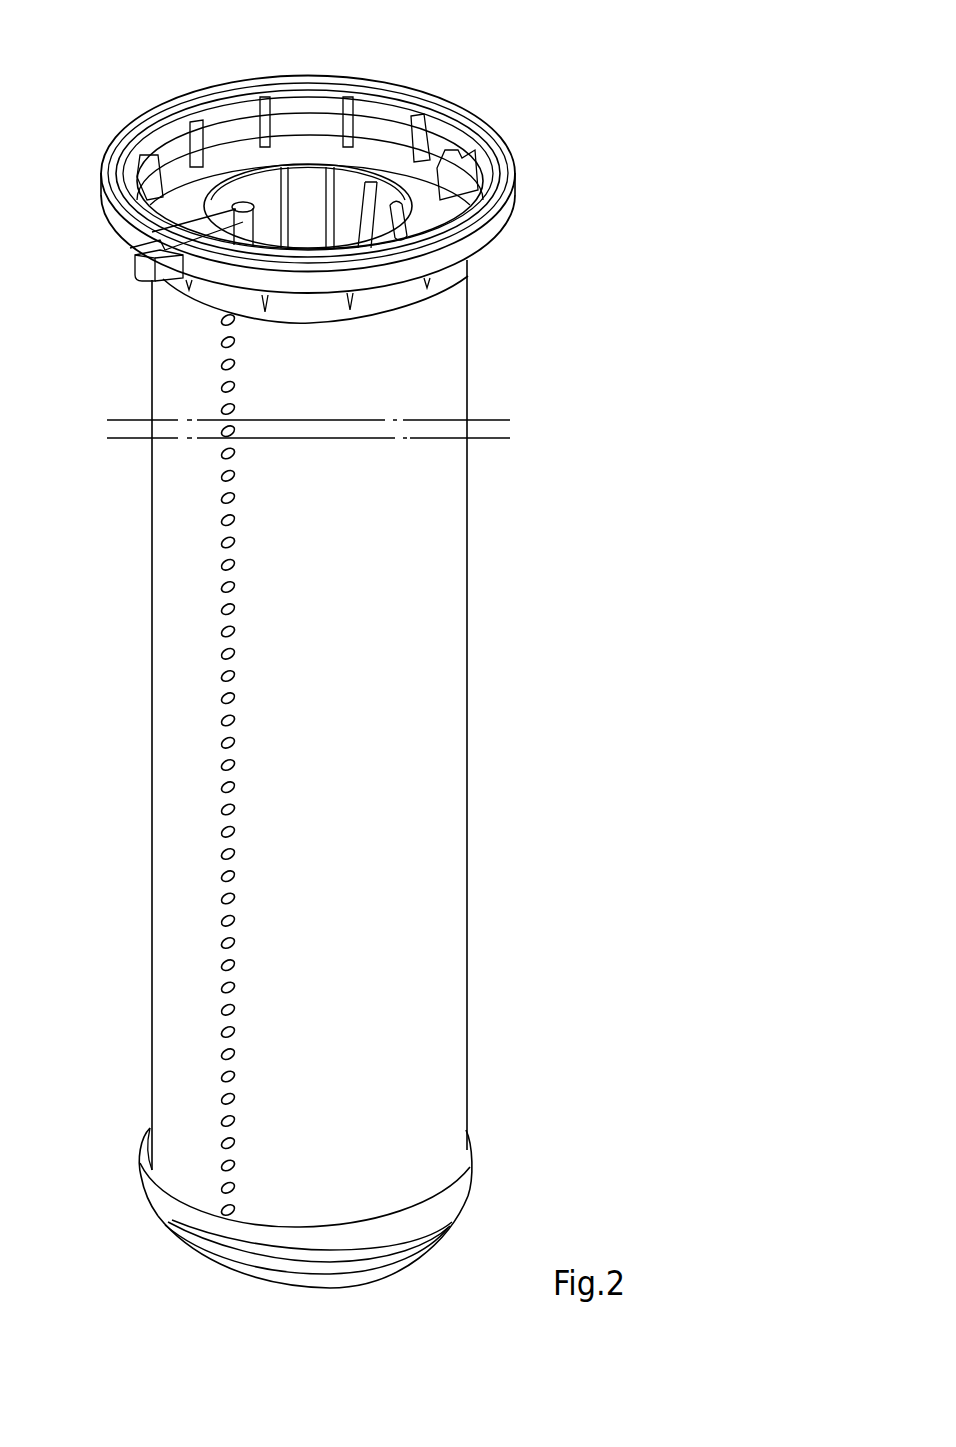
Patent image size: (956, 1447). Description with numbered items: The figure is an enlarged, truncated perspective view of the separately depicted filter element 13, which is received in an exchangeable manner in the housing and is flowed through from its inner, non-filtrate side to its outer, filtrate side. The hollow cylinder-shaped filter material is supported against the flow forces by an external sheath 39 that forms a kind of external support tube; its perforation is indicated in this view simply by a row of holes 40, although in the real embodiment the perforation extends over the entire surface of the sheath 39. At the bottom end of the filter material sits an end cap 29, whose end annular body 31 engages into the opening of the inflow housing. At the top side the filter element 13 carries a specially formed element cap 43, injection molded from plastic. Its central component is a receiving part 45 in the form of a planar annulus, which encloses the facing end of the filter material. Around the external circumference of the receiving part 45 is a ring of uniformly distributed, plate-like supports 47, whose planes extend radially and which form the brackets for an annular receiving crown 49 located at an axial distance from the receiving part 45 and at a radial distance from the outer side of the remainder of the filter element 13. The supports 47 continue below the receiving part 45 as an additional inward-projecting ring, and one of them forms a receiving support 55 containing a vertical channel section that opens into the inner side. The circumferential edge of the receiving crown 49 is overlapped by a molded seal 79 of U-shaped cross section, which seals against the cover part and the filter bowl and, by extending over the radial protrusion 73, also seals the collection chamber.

The filter element 13 is at (533, 666).
The end cap 29 is at (455, 1188).
The end annular body 31 is at (445, 1233).
The external sheath 39 is at (425, 793).
The holes 40 is at (238, 830).
The element cap 43 is at (495, 255).
The receiving part 45 is at (238, 158).
The supports 47 is at (183, 117).
The receiving crown 49 is at (382, 110).
The receiving support 55 is at (247, 214).
The radial protrusion 73 is at (145, 268).
The molded seal 79 is at (508, 178).